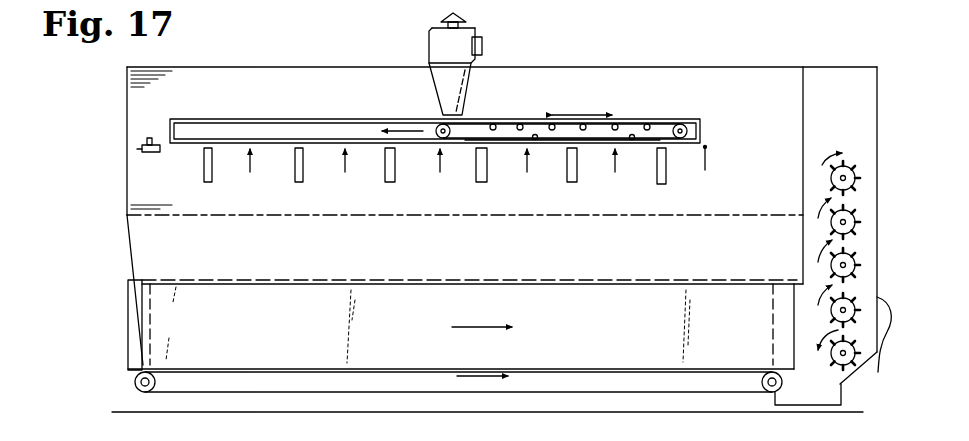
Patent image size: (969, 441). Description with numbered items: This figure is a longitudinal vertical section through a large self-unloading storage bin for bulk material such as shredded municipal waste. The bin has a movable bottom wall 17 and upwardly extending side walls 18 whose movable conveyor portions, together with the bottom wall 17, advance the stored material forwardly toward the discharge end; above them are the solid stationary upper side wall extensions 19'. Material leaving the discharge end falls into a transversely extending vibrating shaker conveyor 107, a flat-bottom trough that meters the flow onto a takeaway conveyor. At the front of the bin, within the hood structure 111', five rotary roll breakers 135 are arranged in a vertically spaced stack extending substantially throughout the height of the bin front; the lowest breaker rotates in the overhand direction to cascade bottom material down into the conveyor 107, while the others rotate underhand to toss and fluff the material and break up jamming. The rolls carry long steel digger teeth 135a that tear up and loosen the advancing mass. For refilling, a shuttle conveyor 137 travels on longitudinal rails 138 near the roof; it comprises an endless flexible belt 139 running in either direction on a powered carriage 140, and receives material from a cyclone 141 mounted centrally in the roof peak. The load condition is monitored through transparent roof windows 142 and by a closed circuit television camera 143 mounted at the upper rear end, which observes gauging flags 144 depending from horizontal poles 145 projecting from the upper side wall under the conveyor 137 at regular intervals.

The bottom wall 17 is at (285, 370).
The side walls 18 is at (393, 298).
The upward side wall extensions 19' is at (509, 211).
The shaker conveyor 107 is at (796, 407).
The hood structure 111' is at (881, 346).
The rotary roll breakers 135 is at (830, 272).
The digger teeth 135a is at (830, 178).
The shuttle conveyor 137 is at (557, 140).
The longitudinal rails 138 is at (255, 118).
The endless flexible belt 139 is at (603, 131).
The carriage 140 is at (467, 134).
The cyclone 141 is at (482, 38).
The windows 142 is at (207, 181).
The closed circuit television camera 143 is at (141, 148).
The flags 144 is at (438, 169).
The horizontal poles 145 is at (706, 147).